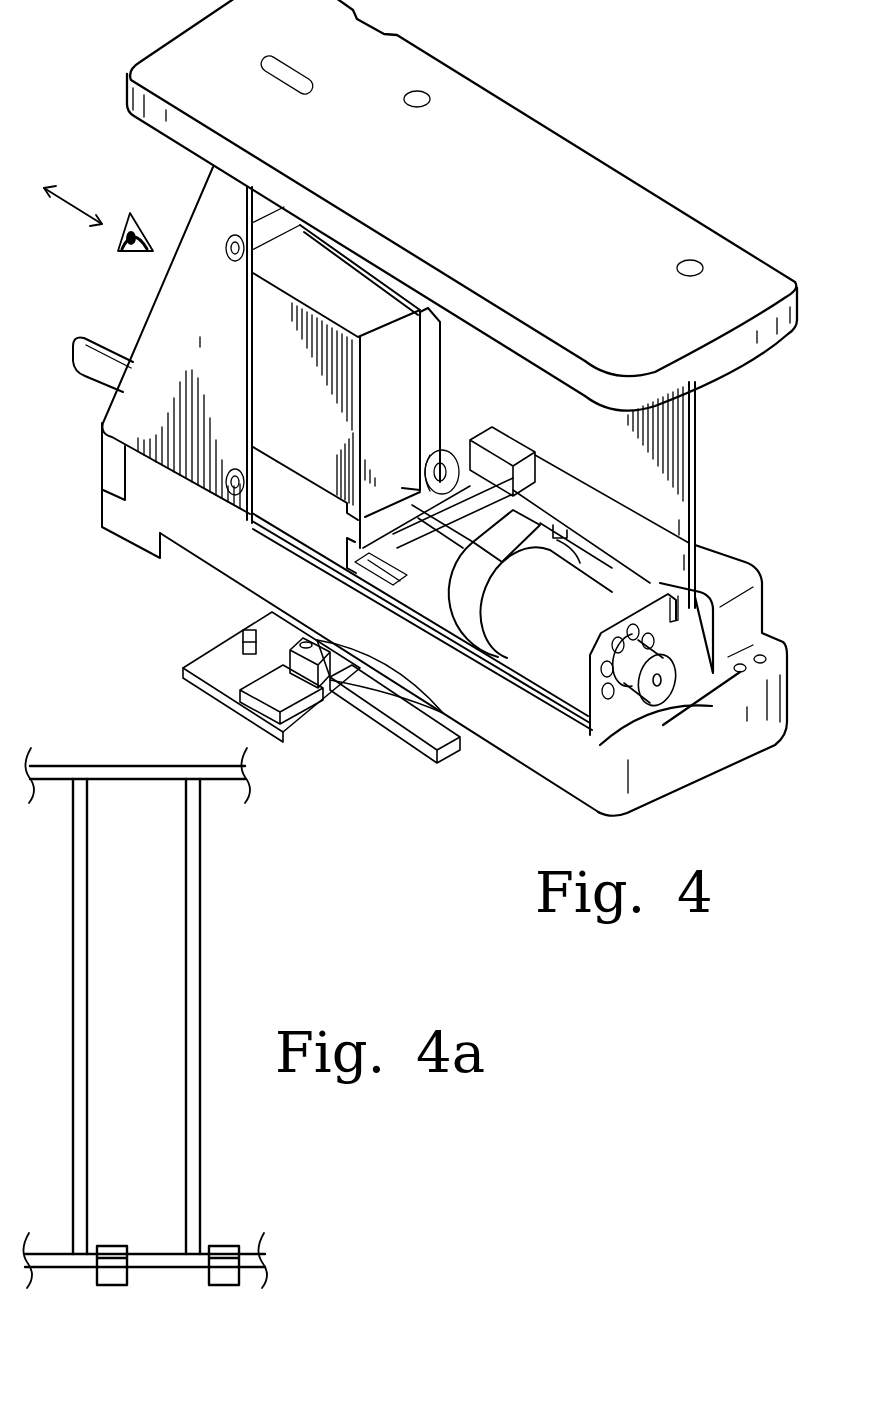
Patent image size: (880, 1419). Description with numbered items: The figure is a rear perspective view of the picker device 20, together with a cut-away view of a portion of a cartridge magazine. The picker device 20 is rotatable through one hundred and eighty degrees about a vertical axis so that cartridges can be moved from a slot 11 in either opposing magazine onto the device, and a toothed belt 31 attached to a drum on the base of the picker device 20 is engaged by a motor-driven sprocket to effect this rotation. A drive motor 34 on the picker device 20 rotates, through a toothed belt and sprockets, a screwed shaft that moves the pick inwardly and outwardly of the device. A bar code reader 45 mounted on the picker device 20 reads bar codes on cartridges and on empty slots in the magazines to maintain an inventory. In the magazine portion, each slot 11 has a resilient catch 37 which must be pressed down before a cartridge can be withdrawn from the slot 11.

In FIG. 4, the picker device 20 is at (691, 159).
In FIG. 4, the bar code reader 45 is at (273, 383).
In FIG. 4, the toothed belt 31 is at (367, 687).
In FIG. 4, the drive motor 34 is at (558, 660).
In FIG. 4A, the slot 11 is at (125, 805).
In FIG. 4A, the resilient catch 37 is at (115, 1245).